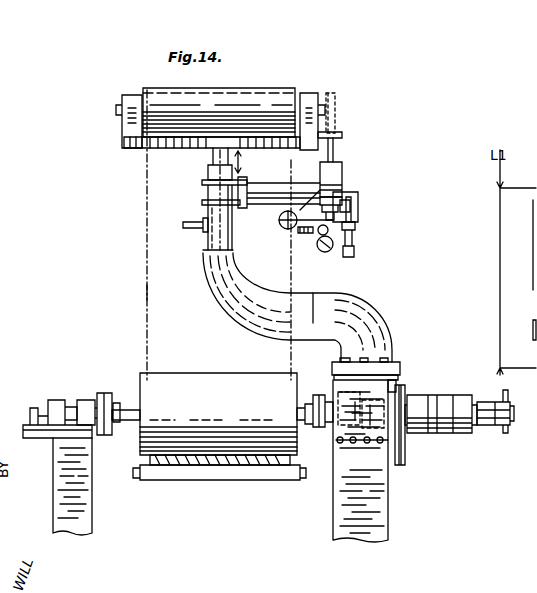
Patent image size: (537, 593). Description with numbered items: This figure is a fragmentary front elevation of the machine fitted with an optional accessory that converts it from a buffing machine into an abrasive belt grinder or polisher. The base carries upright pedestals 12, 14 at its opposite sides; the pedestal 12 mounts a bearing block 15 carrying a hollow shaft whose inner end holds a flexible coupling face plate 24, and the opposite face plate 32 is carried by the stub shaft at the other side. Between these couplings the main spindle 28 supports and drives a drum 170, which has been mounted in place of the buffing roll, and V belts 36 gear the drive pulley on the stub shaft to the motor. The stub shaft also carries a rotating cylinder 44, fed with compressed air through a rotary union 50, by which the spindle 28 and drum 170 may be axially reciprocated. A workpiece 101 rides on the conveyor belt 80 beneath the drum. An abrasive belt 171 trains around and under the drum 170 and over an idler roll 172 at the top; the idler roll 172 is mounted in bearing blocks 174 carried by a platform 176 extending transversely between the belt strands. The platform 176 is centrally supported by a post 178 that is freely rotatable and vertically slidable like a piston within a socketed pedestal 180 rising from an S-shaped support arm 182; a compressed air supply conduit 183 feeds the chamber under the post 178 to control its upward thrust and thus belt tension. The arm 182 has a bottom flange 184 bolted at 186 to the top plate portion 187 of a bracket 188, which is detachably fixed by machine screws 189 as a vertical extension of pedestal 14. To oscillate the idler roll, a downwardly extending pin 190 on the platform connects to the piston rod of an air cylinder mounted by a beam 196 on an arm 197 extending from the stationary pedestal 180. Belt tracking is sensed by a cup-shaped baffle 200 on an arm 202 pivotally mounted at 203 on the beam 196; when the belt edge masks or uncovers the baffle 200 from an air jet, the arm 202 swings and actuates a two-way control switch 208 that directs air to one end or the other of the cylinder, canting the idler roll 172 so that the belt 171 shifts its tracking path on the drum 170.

The pedestal 12 is at (90, 512).
The pedestal 14 is at (388, 509).
The bearing block 15 is at (56, 400).
The flexible coupling face plate 24 is at (86, 398).
The main spindle 28 is at (118, 404).
The flexible coupling face plate 32 is at (317, 396).
The V belts 36 is at (405, 455).
The cylinder 44 is at (461, 444).
The rotary union 50 is at (494, 440).
The conveyor belt 80 is at (190, 480).
The workpiece 101 is at (258, 466).
The drum 170 is at (218, 382).
The abrasive belt 171 is at (147, 293).
The idler roll 172 is at (270, 96).
The bearing block 174 is at (130, 98).
The platform 176 is at (138, 142).
The post 178 is at (211, 156).
The socketed pedestal 180 is at (208, 240).
The S-shaped support arm 182 is at (368, 310).
The compressed air supply conduit 183 is at (190, 220).
The bottom flange 184 is at (400, 366).
The bolts 186 is at (392, 358).
The top plate portion 187 is at (398, 377).
The bracket 188 is at (396, 384).
The machine screws 189 is at (360, 445).
The pin 190 is at (336, 150).
The beam 196 is at (342, 165).
The arm 197 is at (272, 196).
The cup-shaped baffle 200 is at (282, 228).
The arm 202 is at (336, 205).
The pivot device 203 is at (358, 215).
The two-way control switch 208 is at (352, 200).